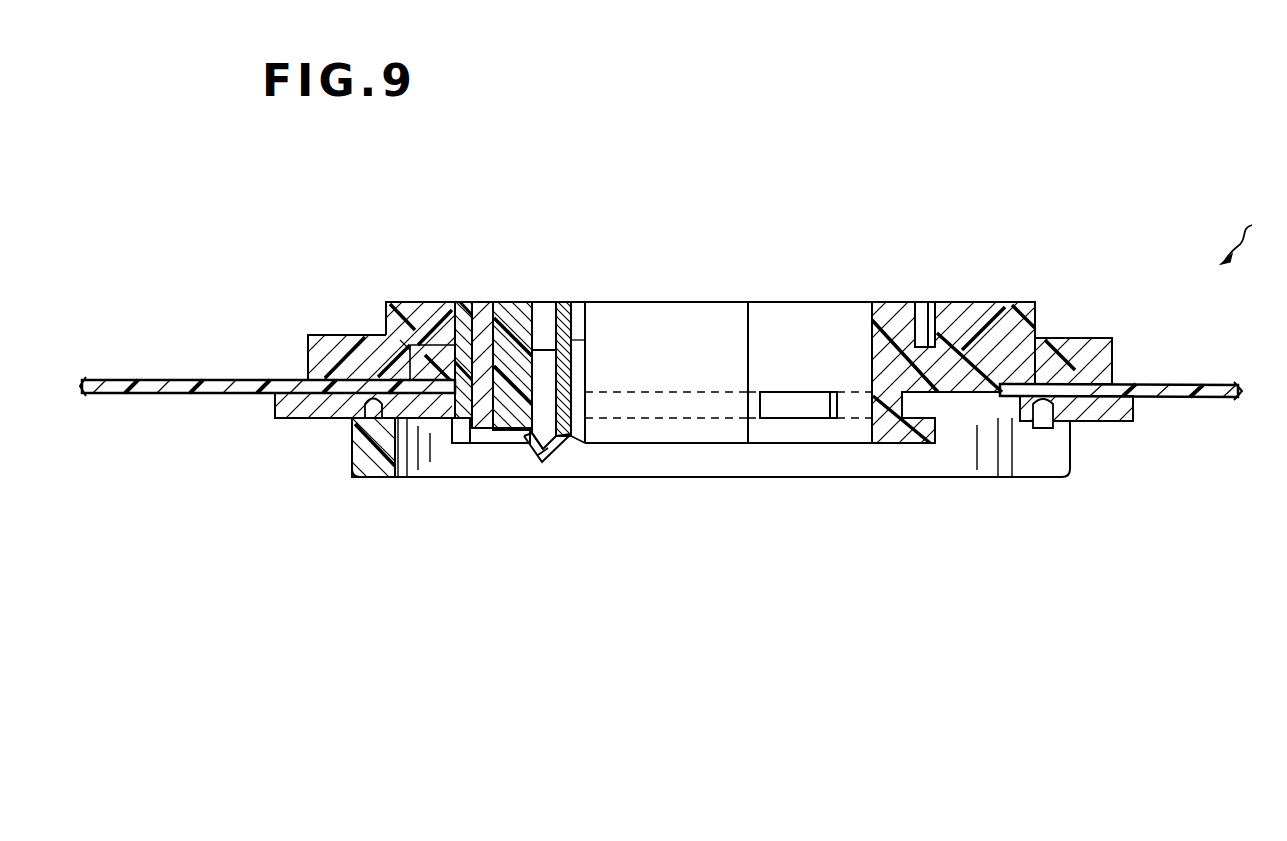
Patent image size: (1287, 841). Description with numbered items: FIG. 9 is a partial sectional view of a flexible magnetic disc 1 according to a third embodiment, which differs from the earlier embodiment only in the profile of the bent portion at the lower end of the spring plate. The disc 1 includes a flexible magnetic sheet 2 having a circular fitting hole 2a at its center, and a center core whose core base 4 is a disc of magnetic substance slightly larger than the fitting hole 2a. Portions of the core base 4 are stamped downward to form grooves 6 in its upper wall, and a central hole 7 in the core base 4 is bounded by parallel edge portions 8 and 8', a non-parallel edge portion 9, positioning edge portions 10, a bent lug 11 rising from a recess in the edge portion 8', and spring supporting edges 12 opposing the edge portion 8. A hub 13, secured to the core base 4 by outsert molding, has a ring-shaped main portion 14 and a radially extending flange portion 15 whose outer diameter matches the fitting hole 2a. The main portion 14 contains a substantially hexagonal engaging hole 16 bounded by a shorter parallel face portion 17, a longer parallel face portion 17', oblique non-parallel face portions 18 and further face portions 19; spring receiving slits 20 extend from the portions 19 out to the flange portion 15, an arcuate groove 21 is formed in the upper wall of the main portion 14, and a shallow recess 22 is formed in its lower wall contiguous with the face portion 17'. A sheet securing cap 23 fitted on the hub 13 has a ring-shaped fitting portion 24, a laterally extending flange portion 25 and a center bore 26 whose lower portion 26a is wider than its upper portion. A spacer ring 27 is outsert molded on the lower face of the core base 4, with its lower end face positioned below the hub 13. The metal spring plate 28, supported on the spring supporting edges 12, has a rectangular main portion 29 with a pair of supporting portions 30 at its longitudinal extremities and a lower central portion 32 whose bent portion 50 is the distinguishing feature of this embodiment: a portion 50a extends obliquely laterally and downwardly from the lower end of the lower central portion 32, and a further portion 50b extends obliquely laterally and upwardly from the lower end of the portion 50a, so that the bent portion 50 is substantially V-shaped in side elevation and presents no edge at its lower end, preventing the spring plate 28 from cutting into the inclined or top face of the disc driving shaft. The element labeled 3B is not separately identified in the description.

The flexible magnetic disc 1 is at (1263, 229).
The flexible magnetic sheet 2 is at (1203, 384).
The fitting hole 2a is at (412, 472).
The housing block 3B is at (1044, 308).
The core base 4 is at (1120, 423).
The grooves 6 is at (358, 402).
The hole 7 is at (887, 405).
The parallel edge portion 8 is at (844, 364).
The parallel edge portion 8' is at (515, 311).
The non-parallel edge portion 9 is at (680, 400).
The positioning edge portions 10 is at (792, 402).
The bent lug 11 is at (485, 302).
The spring supporting edges 12 is at (588, 398).
The hub 13 is at (952, 306).
The main portion 14 is at (897, 320).
The flange portion 15 is at (993, 302).
The engaging hole 16 is at (852, 313).
The parallel face portion 17 is at (825, 339).
The parallel face portion 17' is at (558, 320).
The non-parallel face portions 18 is at (767, 302).
The further face portions 19 is at (650, 302).
The spring receiving slits 20 is at (556, 302).
The arcuate groove 21 is at (925, 318).
The shallow recess 22 is at (468, 443).
The sheet securing cap 23 is at (335, 335).
The fitting portion 24 is at (380, 334).
The flange portion 25 is at (308, 355).
The center bore 26 is at (463, 302).
The lower portion 26a is at (410, 352).
The spacer ring 27 is at (365, 470).
The spring plate 28 is at (588, 335).
The main portion 29 is at (590, 302).
The supporting portions 30 is at (574, 342).
The lower central portion 32 is at (578, 438).
The bent portion 50 is at (540, 463).
The portion 50a is at (566, 455).
The further portion 50b is at (527, 453).